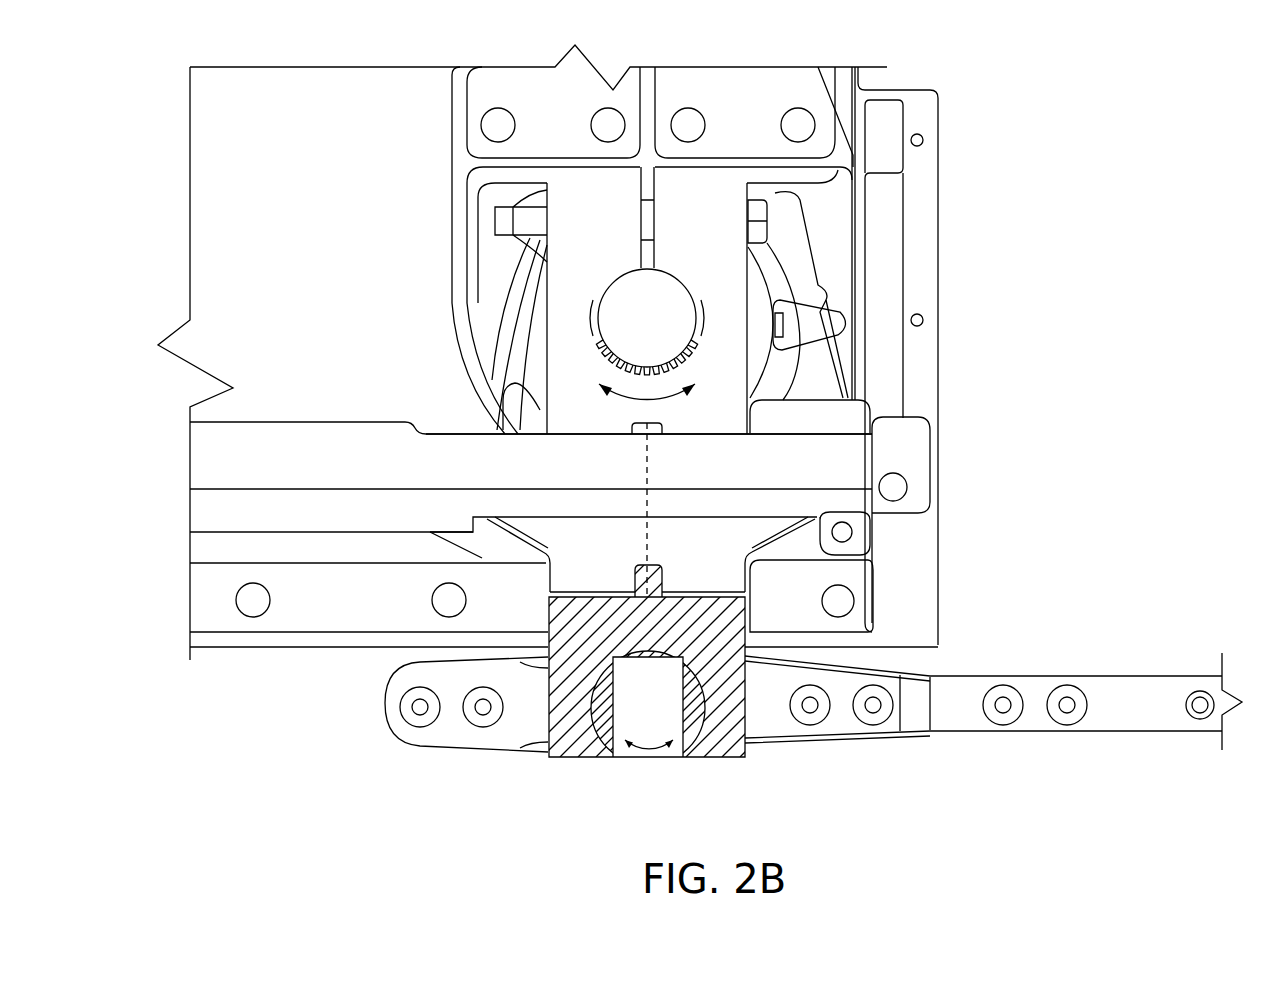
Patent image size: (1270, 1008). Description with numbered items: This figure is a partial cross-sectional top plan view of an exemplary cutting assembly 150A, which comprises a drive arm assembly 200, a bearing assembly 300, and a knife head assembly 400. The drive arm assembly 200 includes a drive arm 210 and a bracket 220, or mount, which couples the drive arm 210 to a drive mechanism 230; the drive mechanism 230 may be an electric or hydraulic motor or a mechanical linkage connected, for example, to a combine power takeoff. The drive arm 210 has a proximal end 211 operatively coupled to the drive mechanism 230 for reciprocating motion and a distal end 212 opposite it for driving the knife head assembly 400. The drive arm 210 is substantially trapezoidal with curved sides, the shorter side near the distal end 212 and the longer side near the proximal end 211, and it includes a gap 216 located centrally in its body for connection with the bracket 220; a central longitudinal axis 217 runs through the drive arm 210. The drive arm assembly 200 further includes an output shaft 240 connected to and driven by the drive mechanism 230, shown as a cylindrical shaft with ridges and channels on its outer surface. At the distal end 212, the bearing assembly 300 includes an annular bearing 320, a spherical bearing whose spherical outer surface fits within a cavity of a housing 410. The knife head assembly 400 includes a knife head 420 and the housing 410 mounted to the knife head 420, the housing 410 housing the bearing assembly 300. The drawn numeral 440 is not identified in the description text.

The cutting assembly 150A is at (1060, 139).
The drive arm assembly 200 is at (970, 595).
The drive arm 210 is at (746, 542).
The proximal end 211 is at (800, 421).
The distal end 212 is at (706, 575).
The gap 216 is at (513, 423).
The central longitudinal axis 217 is at (632, 468).
The bracket 220 is at (565, 258).
The drive mechanism 230 is at (820, 275).
The output shaft 240 is at (620, 308).
The bearing assembly 300 is at (651, 770).
The annular bearing 320 is at (690, 713).
The knife head assembly 400 is at (382, 660).
The housing 410 is at (547, 771).
The knife head 420 is at (1096, 662).
The arm joint 440 is at (847, 690).